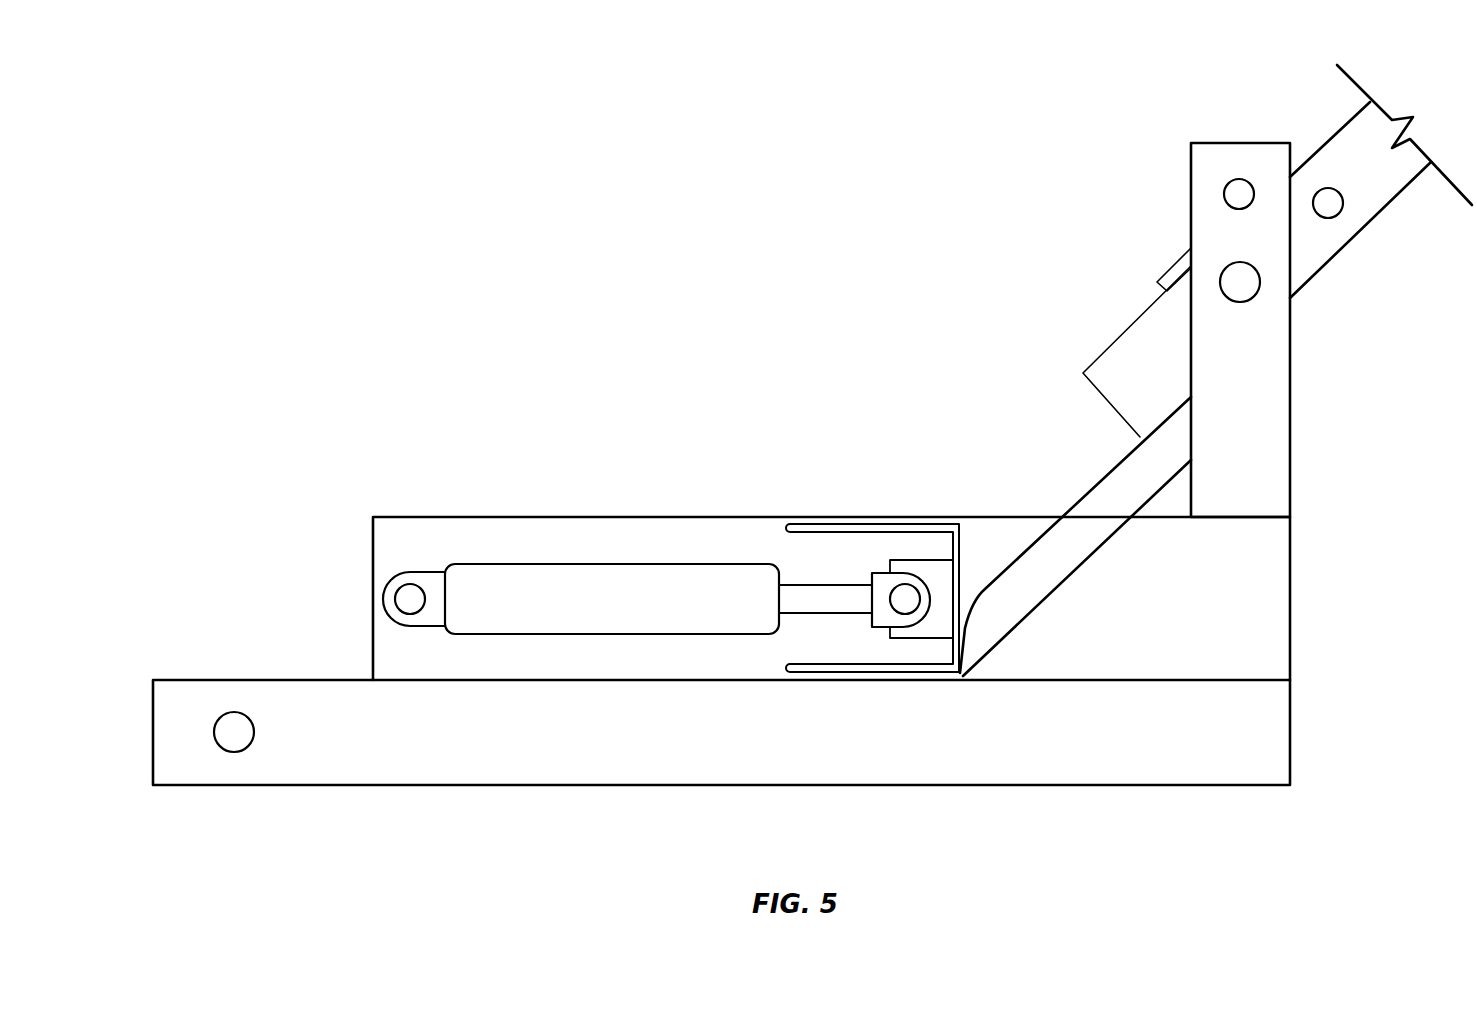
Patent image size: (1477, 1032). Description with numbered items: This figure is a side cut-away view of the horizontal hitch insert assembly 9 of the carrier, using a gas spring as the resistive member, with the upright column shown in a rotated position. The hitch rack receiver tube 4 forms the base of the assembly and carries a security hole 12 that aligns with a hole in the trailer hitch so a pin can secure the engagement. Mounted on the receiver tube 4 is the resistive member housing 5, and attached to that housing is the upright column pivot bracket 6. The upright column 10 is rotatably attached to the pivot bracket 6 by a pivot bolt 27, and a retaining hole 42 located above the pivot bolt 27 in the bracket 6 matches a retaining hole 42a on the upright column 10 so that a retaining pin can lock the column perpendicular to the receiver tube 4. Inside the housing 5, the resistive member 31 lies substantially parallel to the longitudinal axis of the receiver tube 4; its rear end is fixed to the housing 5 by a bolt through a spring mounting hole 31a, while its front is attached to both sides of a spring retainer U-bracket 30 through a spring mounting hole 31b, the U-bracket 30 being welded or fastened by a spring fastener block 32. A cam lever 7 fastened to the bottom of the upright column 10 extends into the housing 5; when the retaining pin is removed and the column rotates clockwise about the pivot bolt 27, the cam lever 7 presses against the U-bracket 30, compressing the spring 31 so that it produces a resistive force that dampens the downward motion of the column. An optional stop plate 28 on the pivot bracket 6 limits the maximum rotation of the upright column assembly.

The hitch rack receiver tube 4 is at (607, 752).
The resistive member housing 5 is at (598, 517).
The upright column pivot bracket 6 is at (1246, 398).
The cam lever 7 is at (1090, 545).
The horizontal hitch insert assembly 9 is at (885, 802).
The upright column 10 is at (1335, 132).
The security hole 12 is at (227, 708).
The pivot bolt 27 is at (1258, 295).
The stop plate 28 is at (1173, 260).
The spring retainer U-bracket 30 is at (850, 522).
The resistive member 31 is at (616, 616).
The spring mounting hole 31a is at (407, 600).
The spring mounting hole 31b is at (905, 600).
The spring fastener block 32 is at (891, 566).
The retaining hole 42 is at (1237, 179).
The retaining hole 42a is at (1342, 217).